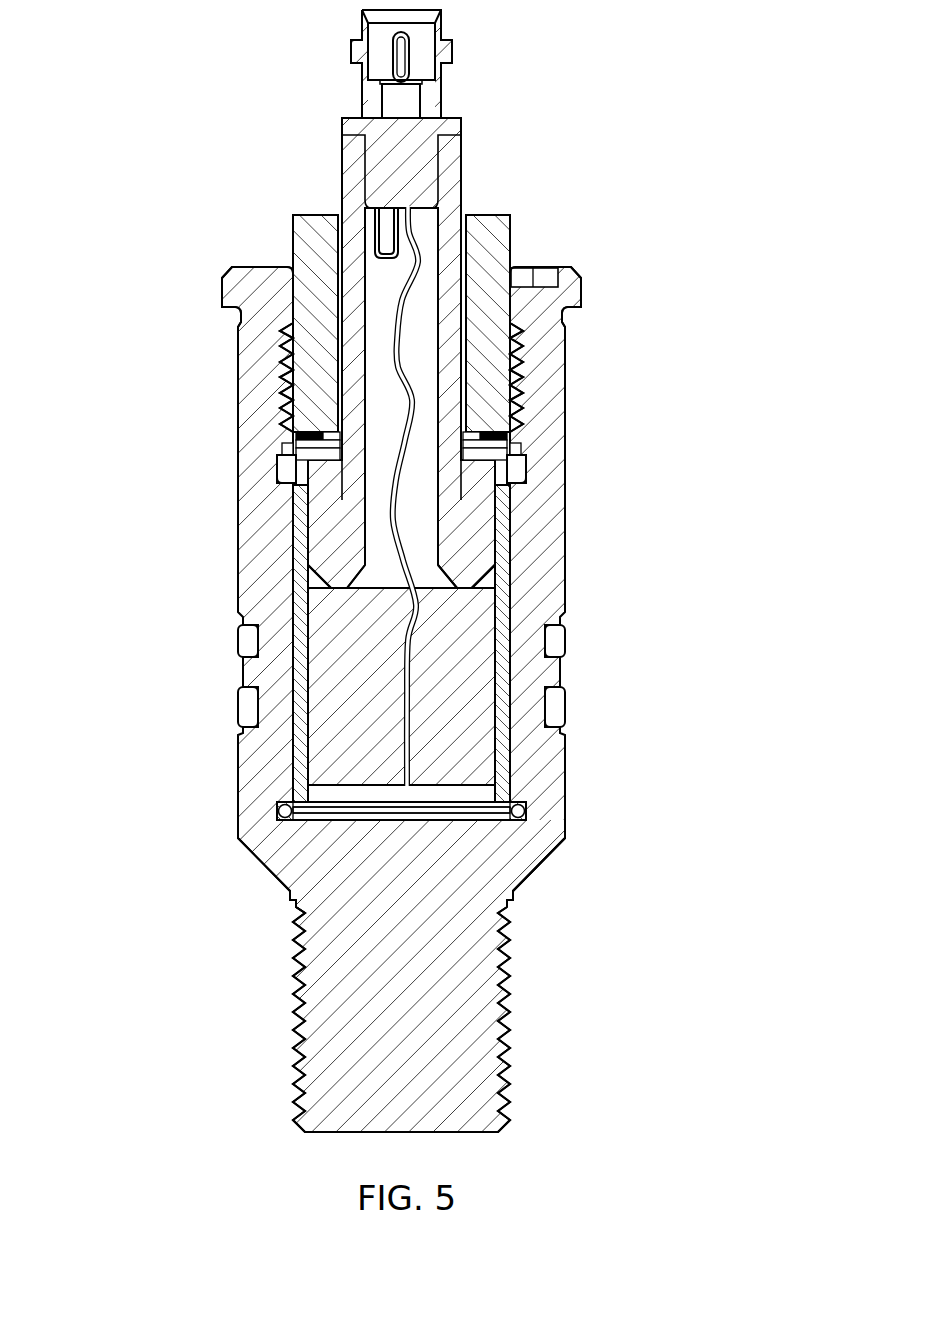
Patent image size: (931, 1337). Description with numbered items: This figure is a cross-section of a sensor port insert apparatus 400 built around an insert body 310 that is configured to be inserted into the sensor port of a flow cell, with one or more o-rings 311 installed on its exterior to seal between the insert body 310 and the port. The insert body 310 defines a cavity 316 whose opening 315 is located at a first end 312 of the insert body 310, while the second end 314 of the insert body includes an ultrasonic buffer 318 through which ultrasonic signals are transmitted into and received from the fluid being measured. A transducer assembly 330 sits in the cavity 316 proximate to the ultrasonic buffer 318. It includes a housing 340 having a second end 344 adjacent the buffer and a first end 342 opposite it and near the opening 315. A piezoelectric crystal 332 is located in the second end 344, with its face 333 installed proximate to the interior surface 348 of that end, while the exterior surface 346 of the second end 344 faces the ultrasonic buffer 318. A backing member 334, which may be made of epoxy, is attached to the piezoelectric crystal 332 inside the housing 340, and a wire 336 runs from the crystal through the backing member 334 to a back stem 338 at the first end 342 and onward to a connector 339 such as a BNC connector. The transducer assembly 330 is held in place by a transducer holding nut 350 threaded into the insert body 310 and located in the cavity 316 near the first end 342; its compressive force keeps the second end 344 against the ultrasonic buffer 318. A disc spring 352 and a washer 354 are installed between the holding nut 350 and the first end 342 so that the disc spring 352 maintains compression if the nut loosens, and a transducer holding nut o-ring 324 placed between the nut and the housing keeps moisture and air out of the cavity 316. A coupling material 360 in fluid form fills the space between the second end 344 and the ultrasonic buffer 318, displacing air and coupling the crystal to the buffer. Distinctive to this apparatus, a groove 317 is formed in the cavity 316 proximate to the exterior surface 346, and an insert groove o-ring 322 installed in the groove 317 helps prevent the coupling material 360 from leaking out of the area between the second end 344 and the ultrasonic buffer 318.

The sensor port insert apparatus 400 is at (465, 668).
The insert body 310 is at (238, 548).
The o-rings 311 is at (566, 655).
The first end 312 is at (238, 443).
The second end 314 is at (252, 853).
The opening 315 is at (286, 232).
The cavity 316 is at (296, 572).
The groove 317 is at (267, 815).
The ultrasonic buffer 318 is at (323, 1030).
The insert groove o-ring 322 is at (459, 806).
The transducer holding nut o-ring 324 is at (512, 432).
The transducer assembly 330 is at (356, 499).
The piezoelectric crystal 332 is at (384, 797).
The face 333 is at (373, 813).
The backing member 334 is at (485, 618).
The wire 336 is at (413, 362).
The back stem 338 is at (487, 547).
The connector 339 is at (446, 47).
The housing 340 is at (500, 582).
The first end 342 is at (498, 528).
The second end 344 is at (293, 778).
The exterior surface 346 is at (450, 890).
The interior surface 348 is at (293, 905).
The transducer holding nut 350 is at (526, 805).
The disc spring 352 is at (508, 447).
The washer 354 is at (510, 465).
The coupling material 360 is at (292, 822).